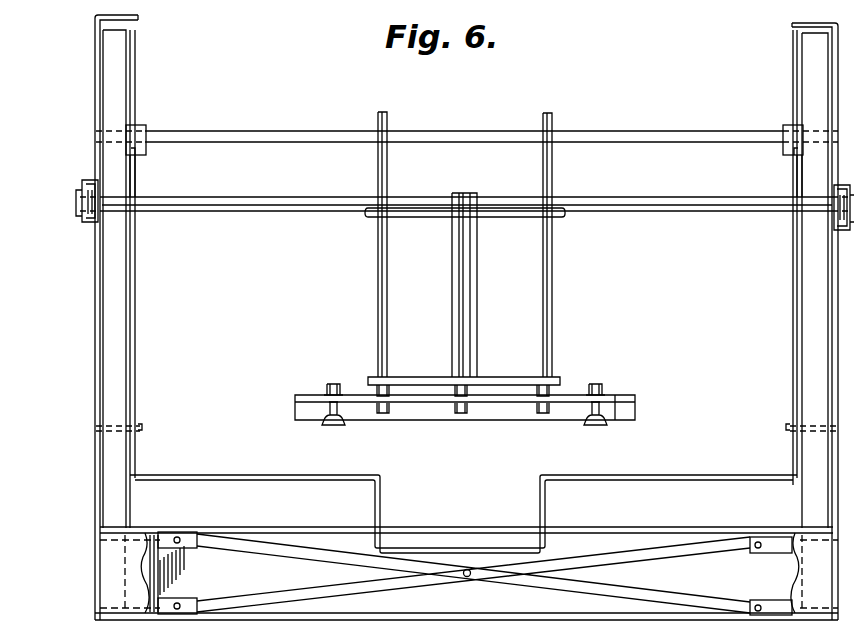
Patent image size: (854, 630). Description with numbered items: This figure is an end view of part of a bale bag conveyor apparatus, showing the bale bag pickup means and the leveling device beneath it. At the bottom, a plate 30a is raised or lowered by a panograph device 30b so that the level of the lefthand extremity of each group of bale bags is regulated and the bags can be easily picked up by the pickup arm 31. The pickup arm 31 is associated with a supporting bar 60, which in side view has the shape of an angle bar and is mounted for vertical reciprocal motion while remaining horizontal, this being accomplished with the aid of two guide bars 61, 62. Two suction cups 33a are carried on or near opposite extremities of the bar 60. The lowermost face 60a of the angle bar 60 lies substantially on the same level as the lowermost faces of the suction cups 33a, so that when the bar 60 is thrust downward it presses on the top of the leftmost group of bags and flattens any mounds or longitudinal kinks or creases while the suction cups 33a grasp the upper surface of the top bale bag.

The plate 30a is at (243, 526).
The panograph device 30b is at (279, 581).
The pickup arm 31 is at (475, 267).
The suction cups 33a is at (333, 426).
The supporting bar 60 is at (300, 404).
The lowermost face of angle bar 60a is at (635, 421).
The guide bar 61 is at (378, 264).
The guide bar 62 is at (553, 268).